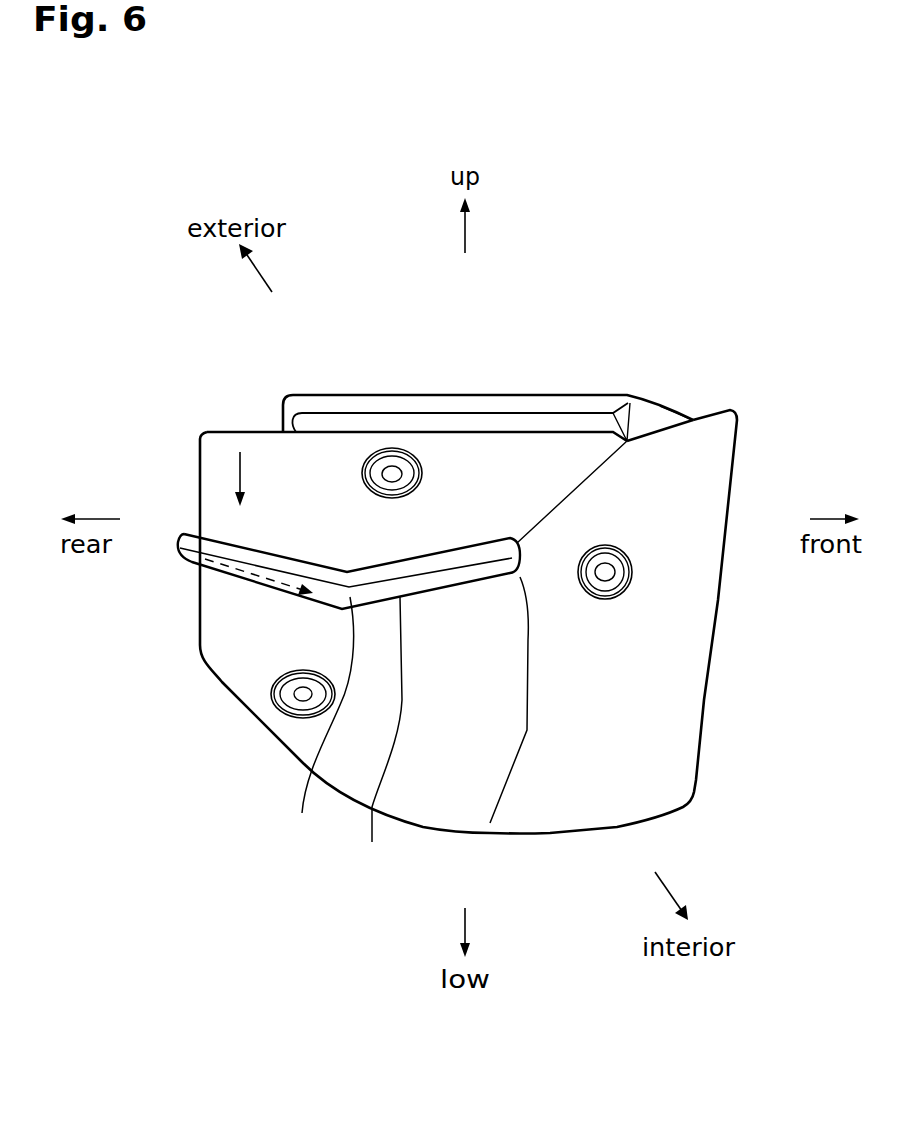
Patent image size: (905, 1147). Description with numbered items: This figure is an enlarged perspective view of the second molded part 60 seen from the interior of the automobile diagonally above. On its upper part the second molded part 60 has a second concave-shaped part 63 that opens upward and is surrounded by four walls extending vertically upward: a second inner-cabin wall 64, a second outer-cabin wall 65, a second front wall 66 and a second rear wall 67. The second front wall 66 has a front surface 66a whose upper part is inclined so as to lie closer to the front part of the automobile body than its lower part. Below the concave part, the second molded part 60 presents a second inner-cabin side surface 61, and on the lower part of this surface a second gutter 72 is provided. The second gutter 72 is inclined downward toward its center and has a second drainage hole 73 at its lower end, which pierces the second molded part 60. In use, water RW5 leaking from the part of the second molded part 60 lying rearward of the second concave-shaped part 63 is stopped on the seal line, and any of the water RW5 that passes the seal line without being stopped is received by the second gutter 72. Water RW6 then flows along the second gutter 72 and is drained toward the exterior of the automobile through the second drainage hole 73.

The second molded part 60 is at (707, 297).
The second inner-cabin side surface 61 is at (325, 452).
The second concave-shaped part 63 is at (453, 392).
The second inner-cabin wall 64 is at (502, 412).
The second outer-cabin wall 65 is at (400, 411).
The second front wall 66 is at (630, 403).
The front surface 66a is at (655, 412).
The second rear wall 67 is at (281, 405).
The second gutter 72 is at (443, 729).
The second drainage hole 73 is at (320, 722).
The water RW5 is at (240, 468).
The water RW6 is at (248, 581).